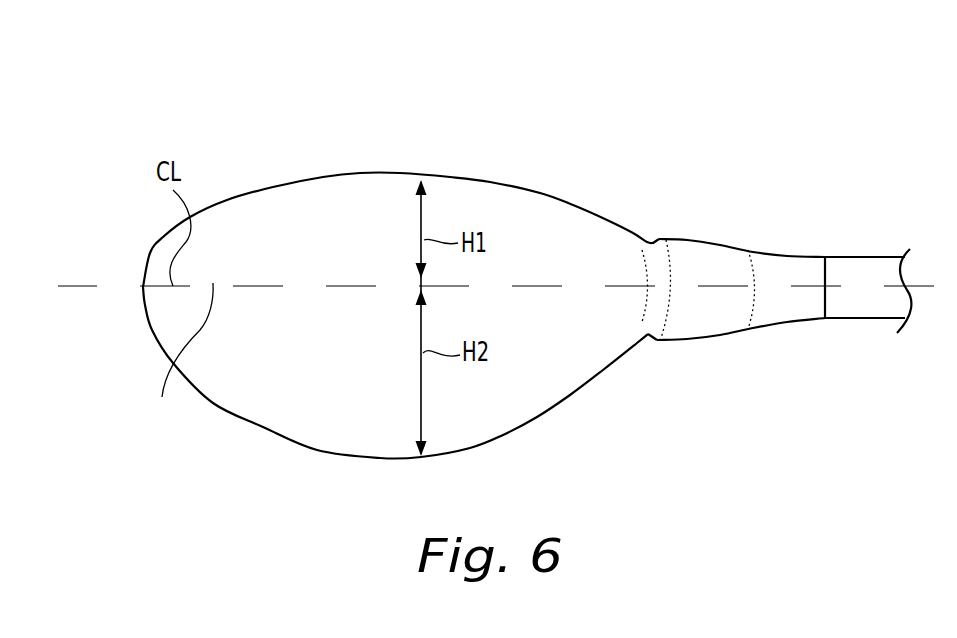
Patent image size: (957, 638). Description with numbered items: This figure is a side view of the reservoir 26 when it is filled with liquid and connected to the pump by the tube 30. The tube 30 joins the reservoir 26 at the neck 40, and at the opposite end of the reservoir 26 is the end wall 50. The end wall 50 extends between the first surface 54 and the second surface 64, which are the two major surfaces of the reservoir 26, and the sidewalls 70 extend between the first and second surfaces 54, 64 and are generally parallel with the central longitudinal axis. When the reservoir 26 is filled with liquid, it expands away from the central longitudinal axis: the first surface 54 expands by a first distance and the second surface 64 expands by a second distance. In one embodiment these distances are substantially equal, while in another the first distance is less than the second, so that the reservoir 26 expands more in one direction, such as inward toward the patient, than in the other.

The reservoir 26 is at (316, 100).
The tube 30 is at (865, 318).
The neck 40 is at (692, 318).
The end wall 50 is at (143, 287).
The first surface 54 is at (370, 203).
The second surface 64 is at (275, 397).
The sidewalls 70 is at (181, 355).